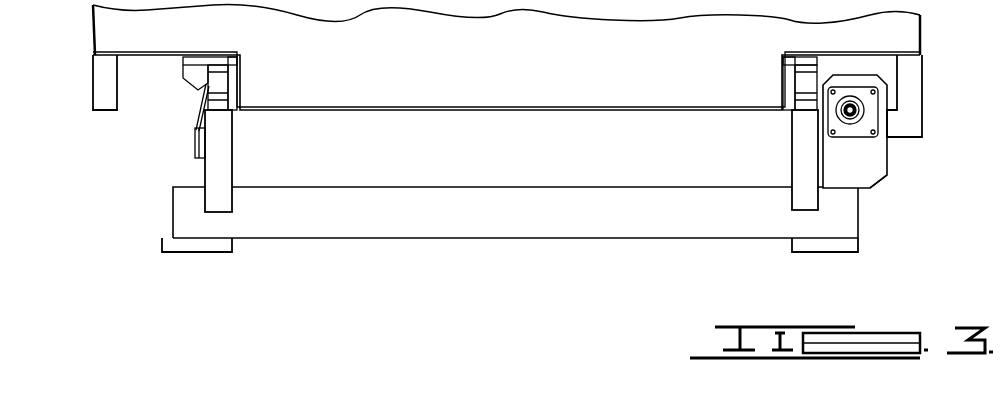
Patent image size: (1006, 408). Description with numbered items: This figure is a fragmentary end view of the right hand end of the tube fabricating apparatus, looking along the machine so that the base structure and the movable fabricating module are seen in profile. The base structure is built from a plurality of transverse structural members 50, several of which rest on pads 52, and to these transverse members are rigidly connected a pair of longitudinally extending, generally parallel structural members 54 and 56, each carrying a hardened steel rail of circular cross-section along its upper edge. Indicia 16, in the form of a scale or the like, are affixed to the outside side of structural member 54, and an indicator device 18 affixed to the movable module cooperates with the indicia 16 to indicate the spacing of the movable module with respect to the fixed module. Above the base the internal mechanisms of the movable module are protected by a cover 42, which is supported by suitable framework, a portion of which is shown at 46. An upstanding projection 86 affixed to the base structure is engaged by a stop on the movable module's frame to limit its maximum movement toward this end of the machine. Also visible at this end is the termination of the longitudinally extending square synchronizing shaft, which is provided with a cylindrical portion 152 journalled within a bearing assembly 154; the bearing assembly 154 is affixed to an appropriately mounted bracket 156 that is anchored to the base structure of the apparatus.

The indicia 16 is at (195, 150).
The indicator device 18 is at (197, 107).
The cover 42 is at (537, 53).
The framework 46 is at (105, 108).
The transverse structural member 50 is at (510, 220).
The pad 52 is at (193, 247).
The longitudinally extending structural member 54 is at (232, 152).
The longitudinally extending structural member 56 is at (797, 155).
The upstanding projection 86 is at (226, 80).
The cylindrical portion 152 is at (863, 107).
The bearing assembly 154 is at (858, 133).
The bracket 156 is at (883, 182).